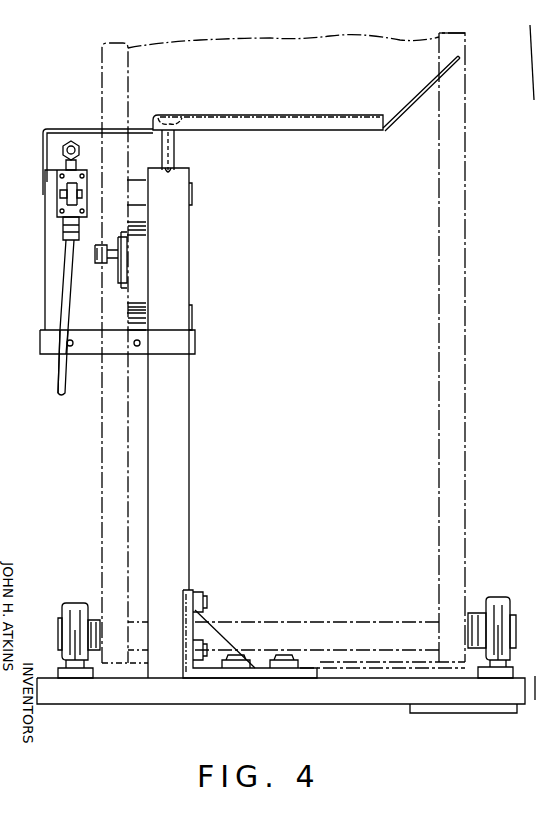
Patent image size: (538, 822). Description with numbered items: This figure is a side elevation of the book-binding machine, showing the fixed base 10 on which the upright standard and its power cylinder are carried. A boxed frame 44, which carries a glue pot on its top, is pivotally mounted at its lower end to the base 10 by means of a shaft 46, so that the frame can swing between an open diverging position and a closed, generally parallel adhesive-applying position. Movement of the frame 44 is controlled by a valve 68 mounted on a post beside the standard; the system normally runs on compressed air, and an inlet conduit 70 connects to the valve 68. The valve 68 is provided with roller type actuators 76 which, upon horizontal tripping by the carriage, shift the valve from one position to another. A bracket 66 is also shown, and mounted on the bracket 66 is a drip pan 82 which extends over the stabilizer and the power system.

The fixed base 10 is at (345, 705).
The boxed frame 44 is at (403, 392).
The shaft 46 is at (376, 625).
The bracket 66 is at (40, 341).
The valve 68 is at (60, 193).
The inlet conduit 70 is at (70, 282).
The roller type actuator 76 is at (63, 206).
The drip pan 82 is at (356, 116).